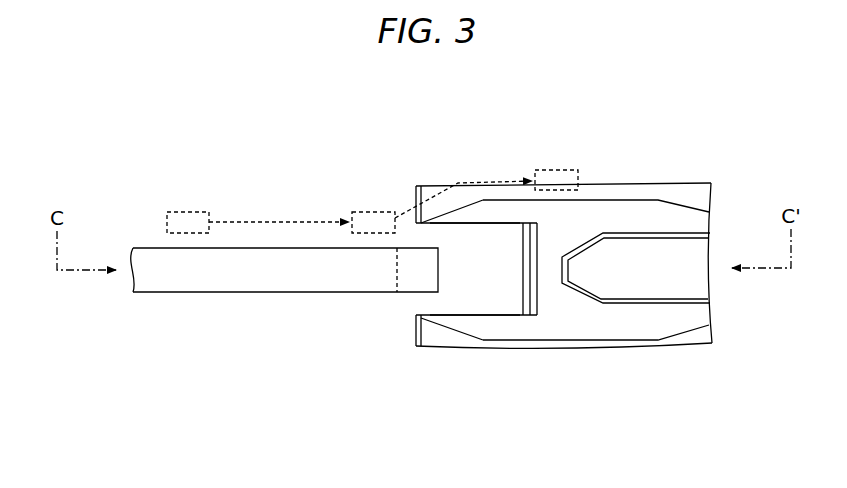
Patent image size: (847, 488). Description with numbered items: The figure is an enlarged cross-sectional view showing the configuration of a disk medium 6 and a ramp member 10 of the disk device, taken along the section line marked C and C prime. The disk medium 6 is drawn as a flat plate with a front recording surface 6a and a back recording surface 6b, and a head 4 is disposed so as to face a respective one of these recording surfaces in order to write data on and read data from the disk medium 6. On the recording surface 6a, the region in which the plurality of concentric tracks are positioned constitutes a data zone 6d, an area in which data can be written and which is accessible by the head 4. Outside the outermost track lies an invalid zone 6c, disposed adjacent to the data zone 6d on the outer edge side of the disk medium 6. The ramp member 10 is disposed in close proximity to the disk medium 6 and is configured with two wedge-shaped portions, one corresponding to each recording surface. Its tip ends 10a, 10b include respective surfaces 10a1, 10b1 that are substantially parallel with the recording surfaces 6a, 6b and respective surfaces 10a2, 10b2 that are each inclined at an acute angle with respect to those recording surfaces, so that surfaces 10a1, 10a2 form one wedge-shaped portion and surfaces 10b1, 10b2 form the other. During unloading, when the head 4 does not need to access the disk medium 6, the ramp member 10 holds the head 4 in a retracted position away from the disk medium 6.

The head 4 is at (188, 212).
The disk medium 6 is at (284, 244).
The recording surface 6a is at (302, 105).
The recording surface 6b is at (242, 295).
The invalid zone 6c is at (415, 246).
The data zone 6d is at (323, 246).
The ramp member 10 is at (564, 330).
The tip end 10a is at (563, 223).
The surface 10a1 is at (475, 231).
The surface 10a2 is at (462, 209).
The tip end 10b is at (564, 371).
The surface 10b1 is at (493, 303).
The surface 10b2 is at (452, 337).